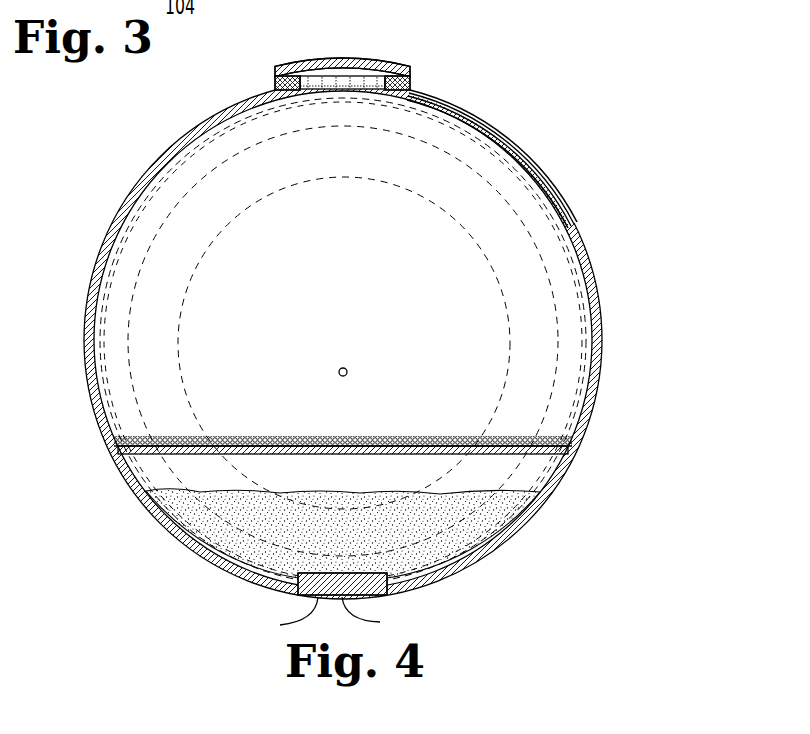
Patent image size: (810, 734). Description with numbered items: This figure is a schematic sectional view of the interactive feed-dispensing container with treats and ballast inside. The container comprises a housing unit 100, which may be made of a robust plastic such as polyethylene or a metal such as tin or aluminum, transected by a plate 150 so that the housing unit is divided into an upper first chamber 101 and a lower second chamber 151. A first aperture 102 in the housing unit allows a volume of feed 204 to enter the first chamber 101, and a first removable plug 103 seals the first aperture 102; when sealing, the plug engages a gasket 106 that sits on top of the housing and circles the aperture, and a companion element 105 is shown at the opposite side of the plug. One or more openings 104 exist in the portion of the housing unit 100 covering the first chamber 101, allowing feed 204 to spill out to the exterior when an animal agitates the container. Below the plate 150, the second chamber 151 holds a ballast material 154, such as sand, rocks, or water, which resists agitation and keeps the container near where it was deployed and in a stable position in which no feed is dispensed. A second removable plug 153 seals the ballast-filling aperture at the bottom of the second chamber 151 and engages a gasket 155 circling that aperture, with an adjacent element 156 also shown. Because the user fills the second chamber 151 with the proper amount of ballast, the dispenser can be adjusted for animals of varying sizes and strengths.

The housing unit 100 is at (512, 106).
The first chamber 101 is at (170, 246).
The first aperture 102 is at (340, 80).
The first removable plug 103 is at (379, 63).
The openings 104 is at (88, 333).
The seal ring 105 is at (411, 72).
The gasket 106 is at (290, 74).
The plate 150 is at (165, 451).
The second chamber 151 is at (207, 470).
The second removable plug 153 is at (380, 622).
The ballast material 154 is at (447, 530).
The gasket 155 is at (297, 590).
The support leg 156 is at (280, 625).
The feed 204 is at (172, 436).